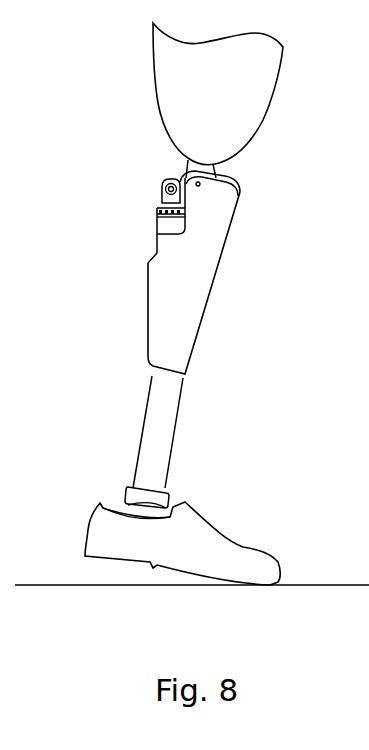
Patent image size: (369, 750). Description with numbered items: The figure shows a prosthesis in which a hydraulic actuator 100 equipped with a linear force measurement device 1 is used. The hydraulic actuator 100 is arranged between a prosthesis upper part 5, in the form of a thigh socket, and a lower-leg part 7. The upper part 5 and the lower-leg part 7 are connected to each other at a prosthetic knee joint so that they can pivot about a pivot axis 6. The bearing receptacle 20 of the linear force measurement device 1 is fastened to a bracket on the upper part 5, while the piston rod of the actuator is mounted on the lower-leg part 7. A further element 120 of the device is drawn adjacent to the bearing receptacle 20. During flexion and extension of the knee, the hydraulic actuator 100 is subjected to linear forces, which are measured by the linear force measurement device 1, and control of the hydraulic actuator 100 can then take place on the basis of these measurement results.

The prosthesis upper part 5 is at (243, 123).
The pivot axis 6 is at (238, 197).
The lower-leg part 7 is at (195, 293).
The bearing receptacle 20 is at (160, 183).
The linear force measurement device 1 is at (160, 199).
The adjustment band 120 is at (159, 231).
The hydraulic actuator 100 is at (150, 247).